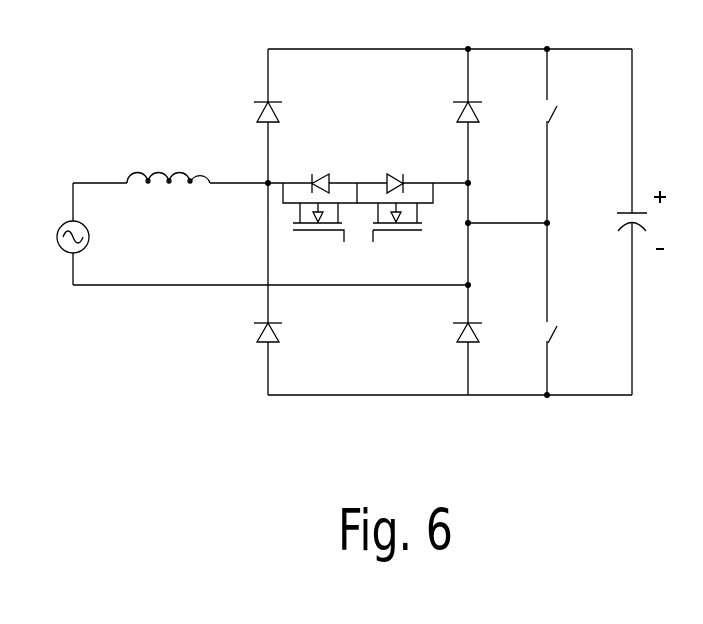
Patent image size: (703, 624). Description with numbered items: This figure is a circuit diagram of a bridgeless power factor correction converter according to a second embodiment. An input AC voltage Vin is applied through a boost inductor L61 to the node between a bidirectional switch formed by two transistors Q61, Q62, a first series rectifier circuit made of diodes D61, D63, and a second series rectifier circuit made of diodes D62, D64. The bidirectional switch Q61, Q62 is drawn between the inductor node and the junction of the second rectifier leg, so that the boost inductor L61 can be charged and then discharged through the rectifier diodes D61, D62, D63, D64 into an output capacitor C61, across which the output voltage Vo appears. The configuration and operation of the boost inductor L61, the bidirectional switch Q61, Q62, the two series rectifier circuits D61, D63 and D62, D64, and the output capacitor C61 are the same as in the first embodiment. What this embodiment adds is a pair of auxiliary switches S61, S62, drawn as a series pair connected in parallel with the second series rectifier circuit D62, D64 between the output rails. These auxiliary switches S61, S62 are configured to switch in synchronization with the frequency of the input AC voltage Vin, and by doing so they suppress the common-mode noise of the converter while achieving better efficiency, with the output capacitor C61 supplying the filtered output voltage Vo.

The input AC voltage Vin is at (51, 236).
The boost inductor L61 is at (168, 160).
The first series rectifier circuit diode D61 is at (294, 113).
The second series rectifier circuit diode D62 is at (494, 113).
The first series rectifier circuit diode D63 is at (295, 336).
The second series rectifier circuit diode D64 is at (495, 336).
The auxiliary switch S61 is at (580, 113).
The auxiliary switch S62 is at (581, 336).
The bidirectional switch transistor Q61 is at (320, 224).
The bidirectional switch transistor Q62 is at (395, 224).
The output capacitor C61 is at (608, 223).
The output voltage Vo is at (664, 220).